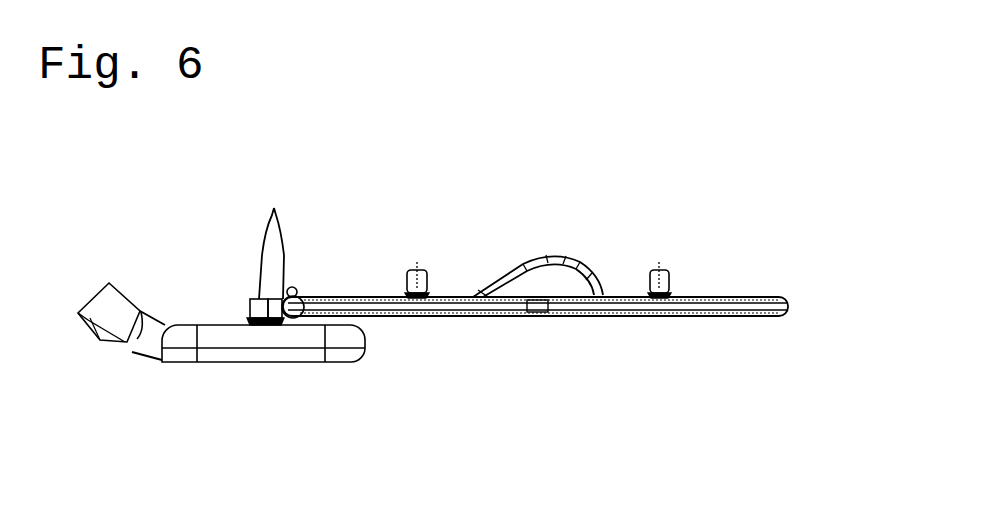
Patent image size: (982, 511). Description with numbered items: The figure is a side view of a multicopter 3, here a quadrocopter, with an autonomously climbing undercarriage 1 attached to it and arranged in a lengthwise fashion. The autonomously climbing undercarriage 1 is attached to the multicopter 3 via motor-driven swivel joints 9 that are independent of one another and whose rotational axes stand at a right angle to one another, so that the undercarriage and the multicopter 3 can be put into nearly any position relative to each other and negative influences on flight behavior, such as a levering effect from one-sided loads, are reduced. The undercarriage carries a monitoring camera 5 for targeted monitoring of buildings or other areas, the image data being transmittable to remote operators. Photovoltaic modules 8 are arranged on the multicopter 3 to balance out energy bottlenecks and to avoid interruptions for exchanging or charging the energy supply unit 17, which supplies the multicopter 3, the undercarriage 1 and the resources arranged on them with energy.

The autonomously climbing undercarriage 1 is at (190, 271).
The multicopter 3 is at (741, 215).
The monitoring camera 5 is at (113, 327).
The photovoltaic modules 8 is at (544, 257).
The motor-driven swivel joints 9 is at (274, 208).
The energy supply unit 17 is at (573, 290).